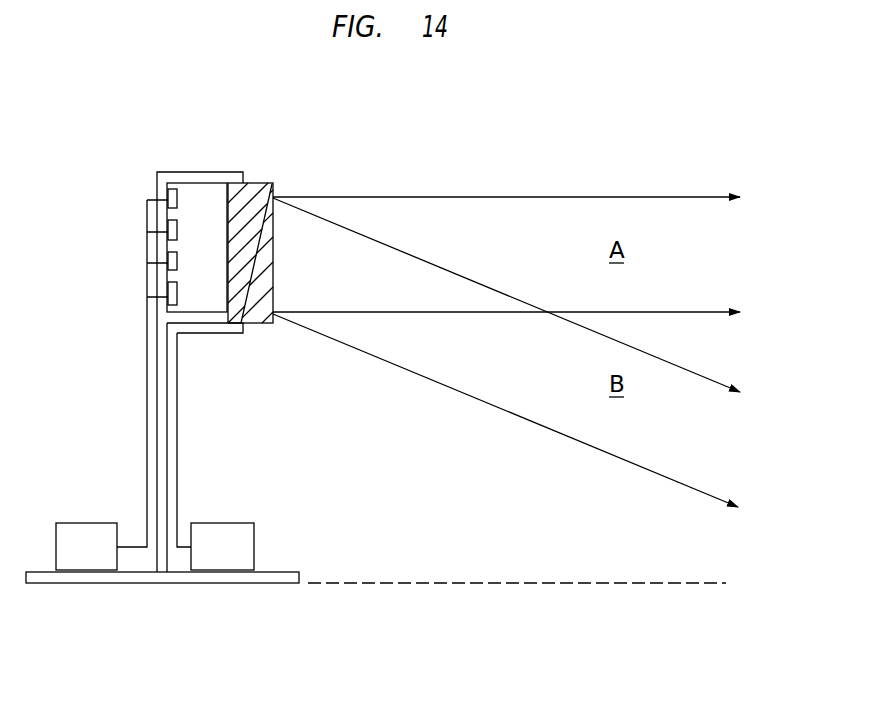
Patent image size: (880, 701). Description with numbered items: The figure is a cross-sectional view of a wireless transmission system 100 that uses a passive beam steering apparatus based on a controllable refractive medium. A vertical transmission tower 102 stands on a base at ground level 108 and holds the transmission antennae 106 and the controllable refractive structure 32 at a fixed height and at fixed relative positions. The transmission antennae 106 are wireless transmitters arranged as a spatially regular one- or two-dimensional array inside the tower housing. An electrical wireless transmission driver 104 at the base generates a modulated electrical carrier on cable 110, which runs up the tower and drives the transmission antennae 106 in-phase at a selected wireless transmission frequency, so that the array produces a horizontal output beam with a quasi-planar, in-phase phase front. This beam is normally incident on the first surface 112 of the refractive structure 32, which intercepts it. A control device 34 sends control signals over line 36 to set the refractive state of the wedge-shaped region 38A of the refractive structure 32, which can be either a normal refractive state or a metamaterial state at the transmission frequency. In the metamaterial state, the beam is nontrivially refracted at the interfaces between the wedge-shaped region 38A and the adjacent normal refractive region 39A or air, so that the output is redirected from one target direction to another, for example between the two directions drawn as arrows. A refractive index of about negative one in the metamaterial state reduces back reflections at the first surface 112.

The wireless transmission system 100 is at (166, 644).
The vertical transmission tower 102 is at (157, 172).
The electrical wireless transmission driver 104 is at (102, 560).
The transmission antennae 106 is at (180, 256).
The ground level 108 is at (483, 582).
The cable 110 is at (147, 412).
The first surface 112 is at (228, 252).
The controllable refractive structure 32 is at (267, 183).
The control device 34 is at (255, 524).
The line 36 is at (177, 480).
The wedge-shaped region 38A is at (228, 217).
The normal refractive region 39A is at (271, 265).